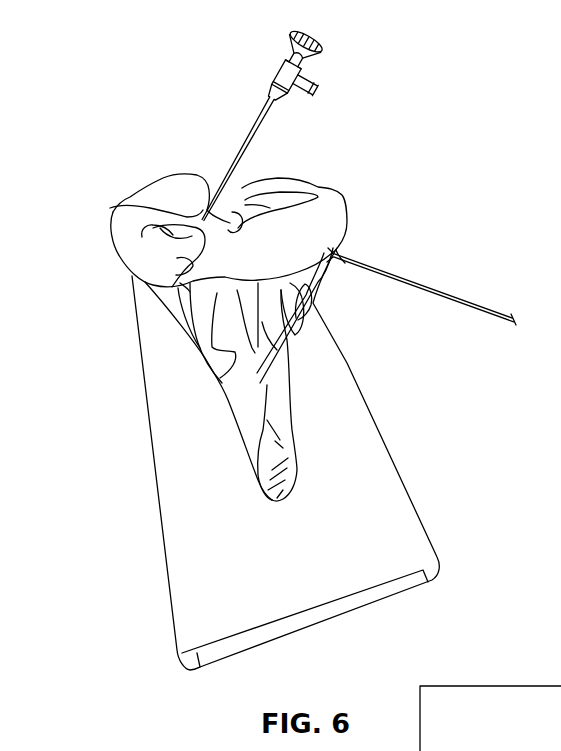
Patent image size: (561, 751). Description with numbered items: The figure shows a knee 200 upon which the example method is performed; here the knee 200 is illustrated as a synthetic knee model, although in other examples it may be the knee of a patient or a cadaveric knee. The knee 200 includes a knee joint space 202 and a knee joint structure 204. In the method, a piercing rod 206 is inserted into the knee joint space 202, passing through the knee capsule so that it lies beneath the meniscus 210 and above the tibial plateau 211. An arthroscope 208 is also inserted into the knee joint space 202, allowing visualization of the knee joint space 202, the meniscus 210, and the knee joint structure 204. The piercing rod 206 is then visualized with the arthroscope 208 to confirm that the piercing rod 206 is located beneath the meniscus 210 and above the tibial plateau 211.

The knee 200 is at (140, 185).
The knee joint space 202 is at (124, 231).
The knee joint structure 204 is at (183, 315).
The piercing rod 206 is at (415, 286).
The arthroscope 208 is at (262, 111).
The meniscus 210 is at (242, 253).
The tibial plateau 211 is at (180, 231).